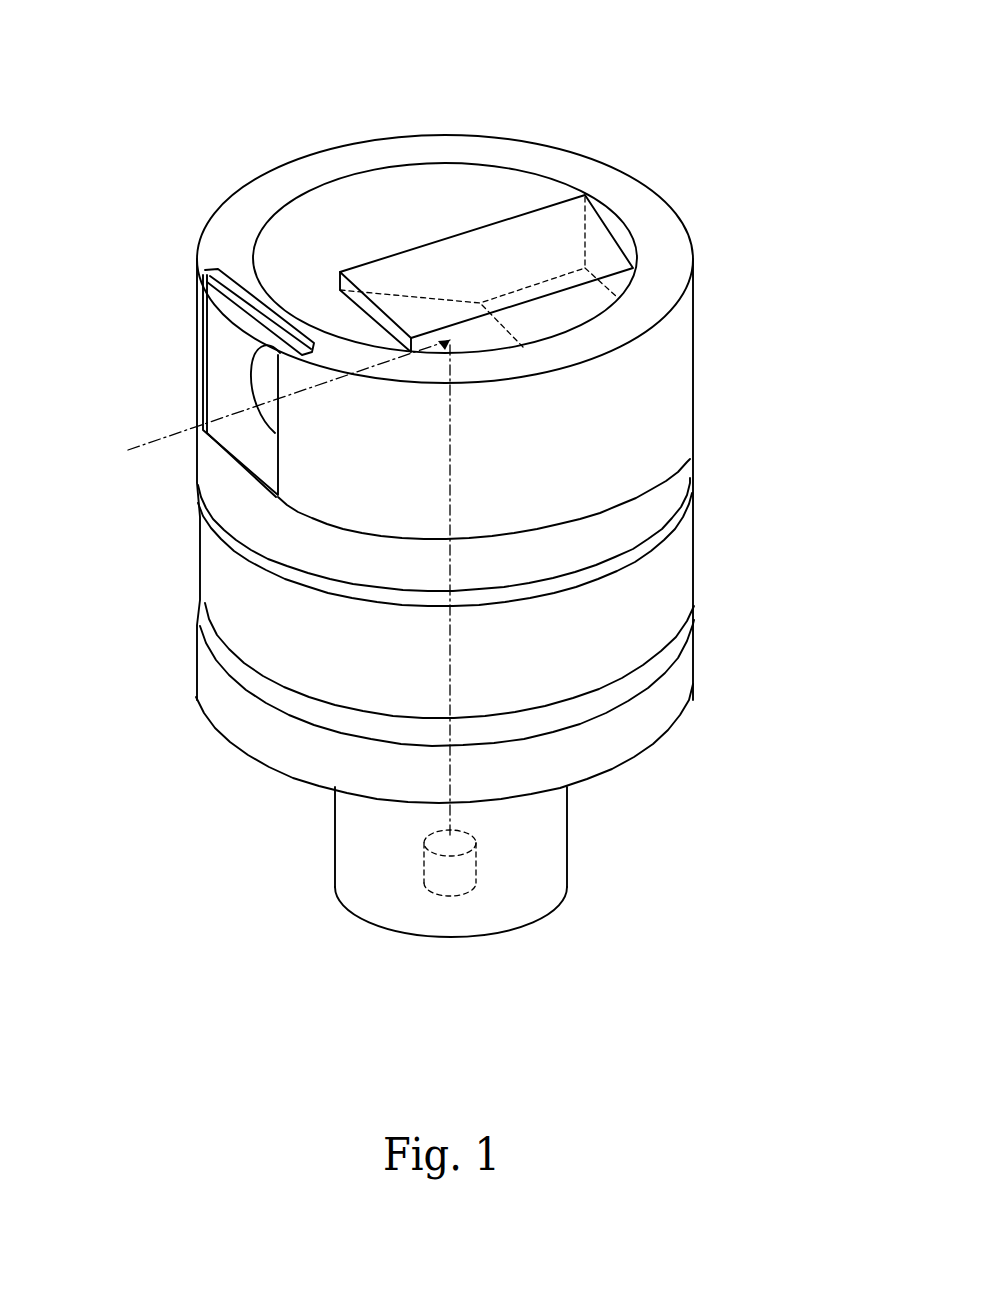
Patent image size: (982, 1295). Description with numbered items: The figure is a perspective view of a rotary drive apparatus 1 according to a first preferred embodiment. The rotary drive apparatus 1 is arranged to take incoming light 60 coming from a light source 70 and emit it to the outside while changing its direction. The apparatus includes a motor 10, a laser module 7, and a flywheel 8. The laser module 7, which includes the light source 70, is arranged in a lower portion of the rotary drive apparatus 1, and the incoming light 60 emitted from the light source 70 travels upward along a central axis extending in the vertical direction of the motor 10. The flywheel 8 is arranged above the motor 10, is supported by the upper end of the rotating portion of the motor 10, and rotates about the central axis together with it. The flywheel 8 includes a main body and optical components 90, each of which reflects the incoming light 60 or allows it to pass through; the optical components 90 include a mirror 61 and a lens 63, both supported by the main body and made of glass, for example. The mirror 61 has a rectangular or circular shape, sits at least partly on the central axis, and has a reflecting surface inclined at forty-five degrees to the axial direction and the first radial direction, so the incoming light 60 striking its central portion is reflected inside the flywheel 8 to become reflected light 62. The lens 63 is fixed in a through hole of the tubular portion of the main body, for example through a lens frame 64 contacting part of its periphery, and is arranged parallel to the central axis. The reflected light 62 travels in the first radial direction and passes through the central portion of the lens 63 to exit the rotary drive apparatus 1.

The rotary drive apparatus 1 is at (587, 106).
The flywheel 8 is at (754, 327).
The motor 10 is at (744, 543).
The laser module 7 is at (295, 853).
The light source 70 is at (458, 870).
The incoming light 60 is at (450, 681).
The mirror 61 is at (401, 297).
The lens 63 is at (263, 373).
The lens frame 64 is at (233, 398).
The reflected light 62 is at (247, 404).
The optical components 90 is at (379, 251).